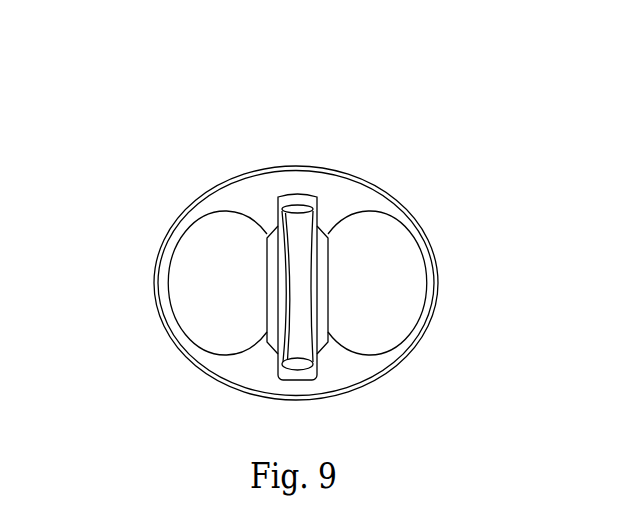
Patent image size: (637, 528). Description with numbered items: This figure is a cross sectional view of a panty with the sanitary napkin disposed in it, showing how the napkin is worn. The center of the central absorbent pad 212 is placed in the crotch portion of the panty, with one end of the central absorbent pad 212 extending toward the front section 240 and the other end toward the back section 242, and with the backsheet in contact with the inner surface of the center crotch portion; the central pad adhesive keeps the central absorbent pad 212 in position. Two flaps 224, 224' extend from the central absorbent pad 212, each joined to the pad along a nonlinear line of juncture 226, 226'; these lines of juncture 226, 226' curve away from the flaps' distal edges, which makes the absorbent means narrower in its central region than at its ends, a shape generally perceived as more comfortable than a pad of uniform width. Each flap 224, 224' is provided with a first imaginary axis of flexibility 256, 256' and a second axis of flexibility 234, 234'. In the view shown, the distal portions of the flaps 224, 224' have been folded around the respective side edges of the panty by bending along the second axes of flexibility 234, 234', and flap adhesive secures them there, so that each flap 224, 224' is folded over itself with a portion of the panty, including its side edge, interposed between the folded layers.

The back section 242 is at (232, 182).
The front section 240 is at (335, 397).
The flap 224 is at (187, 281).
The flap 224' is at (427, 282).
The second axis of flexibility 234 is at (231, 290).
The second axis of flexibility 234' is at (360, 290).
The central absorbent pad 212 is at (295, 360).
The first imaginary axis of flexibility 256 is at (243, 286).
The first imaginary axis of flexibility 256' is at (357, 286).
The line of juncture 226 is at (317, 137).
The line of juncture 226' is at (363, 243).